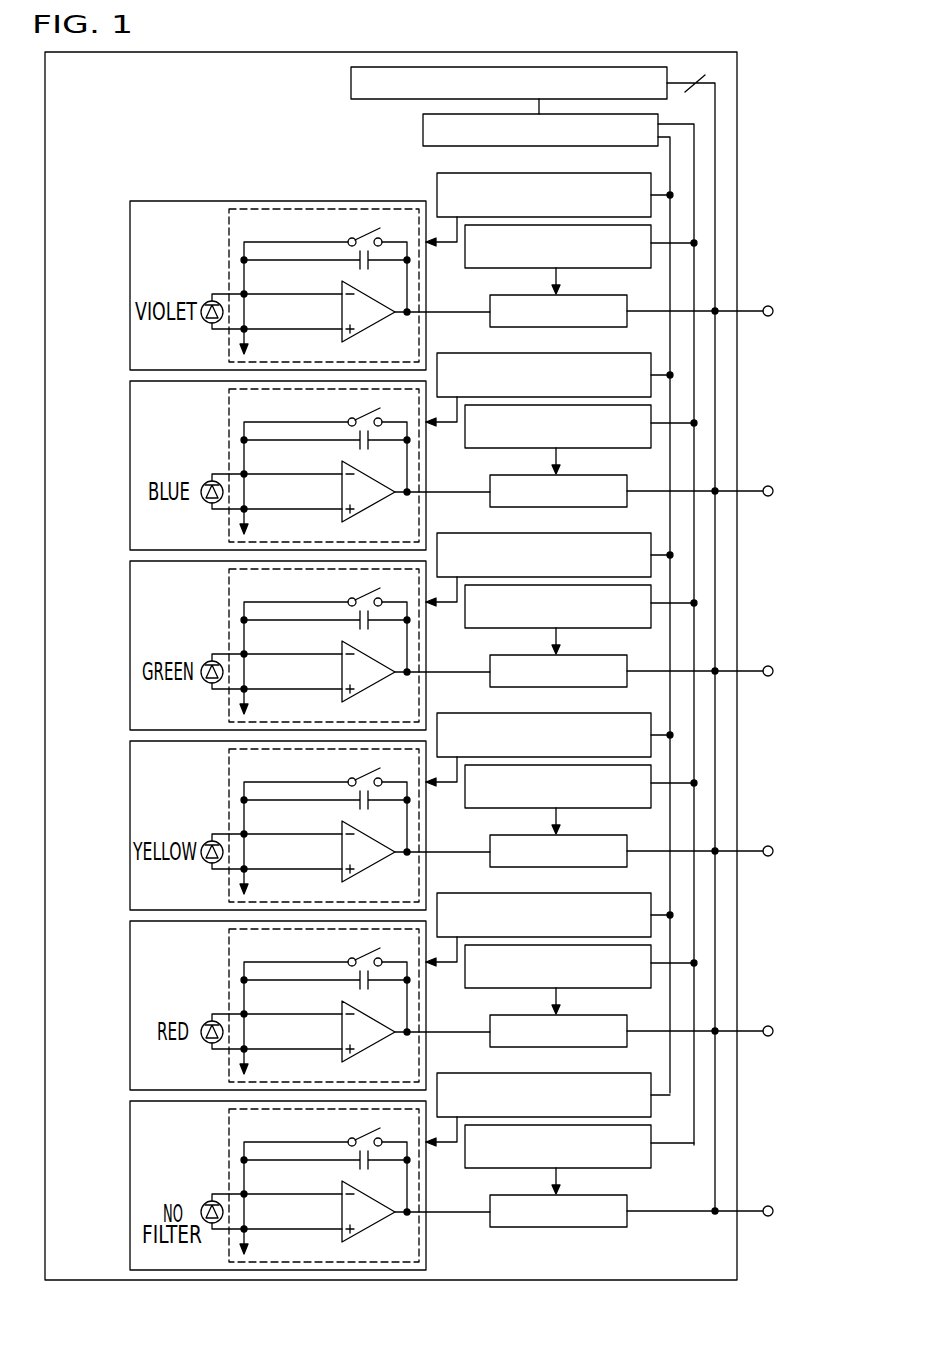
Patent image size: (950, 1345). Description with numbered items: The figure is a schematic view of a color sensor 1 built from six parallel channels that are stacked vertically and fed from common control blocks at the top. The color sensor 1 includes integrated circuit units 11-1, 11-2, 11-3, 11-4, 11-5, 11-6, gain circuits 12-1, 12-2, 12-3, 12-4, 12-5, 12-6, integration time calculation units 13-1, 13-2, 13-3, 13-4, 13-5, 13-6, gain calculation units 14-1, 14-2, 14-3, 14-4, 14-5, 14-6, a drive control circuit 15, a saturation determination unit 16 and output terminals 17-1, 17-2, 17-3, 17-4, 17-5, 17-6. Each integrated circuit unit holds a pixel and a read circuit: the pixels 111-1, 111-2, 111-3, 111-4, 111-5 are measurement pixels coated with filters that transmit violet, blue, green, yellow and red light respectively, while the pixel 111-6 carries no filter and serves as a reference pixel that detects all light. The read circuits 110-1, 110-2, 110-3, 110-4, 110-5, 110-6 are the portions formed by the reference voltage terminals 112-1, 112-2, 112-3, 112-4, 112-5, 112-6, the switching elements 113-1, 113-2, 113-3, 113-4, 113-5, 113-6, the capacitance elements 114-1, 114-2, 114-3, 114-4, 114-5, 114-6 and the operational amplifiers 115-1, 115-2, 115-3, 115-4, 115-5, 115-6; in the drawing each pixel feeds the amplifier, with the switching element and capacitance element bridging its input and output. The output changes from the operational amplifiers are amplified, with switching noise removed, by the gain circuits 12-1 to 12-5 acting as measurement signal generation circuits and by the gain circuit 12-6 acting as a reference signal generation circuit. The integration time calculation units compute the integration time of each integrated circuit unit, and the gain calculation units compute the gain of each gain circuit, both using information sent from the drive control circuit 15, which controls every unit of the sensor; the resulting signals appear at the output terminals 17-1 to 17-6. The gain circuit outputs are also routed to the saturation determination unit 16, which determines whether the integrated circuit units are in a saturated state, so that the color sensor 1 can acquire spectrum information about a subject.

The color sensor 1 is at (737, 72).
The saturation determination unit 16 is at (351, 83).
The drive control circuit 15 is at (423, 130).
The integrated circuit unit 11-1 is at (130, 226).
The integrated circuit unit 11-2 is at (243, 465).
The integrated circuit unit 11-3 is at (243, 645).
The integrated circuit unit 11-4 is at (243, 825).
The integrated circuit unit 11-5 is at (243, 1005).
The integrated circuit unit 11-6 is at (243, 1185).
The read circuit 110-1 is at (229, 226).
The read circuit 110-2 is at (282, 465).
The read circuit 110-3 is at (282, 645).
The read circuit 110-4 is at (282, 825).
The read circuit 110-5 is at (282, 1005).
The read circuit 110-6 is at (282, 1185).
The pixel 111-1 is at (203, 300).
The pixel 111-2 is at (184, 468).
The pixel 111-3 is at (184, 648).
The pixel 111-4 is at (184, 828).
The pixel 111-5 is at (184, 1008).
The pixel 111-6 is at (184, 1188).
The reference voltage terminal 112-1 is at (250, 350).
The reference voltage terminal 112-2 is at (285, 525).
The reference voltage terminal 112-3 is at (285, 705).
The reference voltage terminal 112-4 is at (285, 885).
The reference voltage terminal 112-5 is at (285, 1065).
The reference voltage terminal 112-6 is at (285, 1245).
The switching element 113-1 is at (352, 234).
The switching element 113-2 is at (329, 410).
The switching element 113-3 is at (329, 590).
The switching element 113-4 is at (329, 770).
The switching element 113-5 is at (329, 950).
The switching element 113-6 is at (329, 1130).
The capacitance element 114-1 is at (357, 264).
The capacitance element 114-2 is at (325, 451).
The capacitance element 114-3 is at (325, 631).
The capacitance element 114-4 is at (325, 811).
The capacitance element 114-5 is at (325, 991).
The capacitance element 114-6 is at (325, 1171).
The operational amplifier 115-1 is at (342, 312).
The operational amplifier 115-2 is at (326, 491).
The operational amplifier 115-3 is at (326, 671).
The operational amplifier 115-4 is at (326, 851).
The operational amplifier 115-5 is at (326, 1031).
The operational amplifier 115-6 is at (326, 1211).
The gain circuit 12-1 is at (594, 294).
The gain circuit 12-2 is at (626, 477).
The gain circuit 12-3 is at (626, 657).
The gain circuit 12-4 is at (626, 837).
The gain circuit 12-5 is at (626, 1017).
The gain circuit 12-6 is at (626, 1197).
The integration time calculation unit 13-1 is at (558, 174).
The integration time calculation unit 13-2 is at (549, 375).
The integration time calculation unit 13-3 is at (549, 555).
The integration time calculation unit 13-4 is at (549, 735).
The integration time calculation unit 13-5 is at (549, 915).
The integration time calculation unit 13-6 is at (548, 1095).
The gain calculation unit 14-1 is at (502, 270).
The gain calculation unit 14-2 is at (565, 438).
The gain calculation unit 14-3 is at (565, 618).
The gain calculation unit 14-4 is at (565, 798).
The gain calculation unit 14-5 is at (565, 978).
The gain calculation unit 14-6 is at (563, 1158).
The output terminal 17-1 is at (774, 311).
The output terminal 17-2 is at (803, 492).
The output terminal 17-3 is at (803, 672).
The output terminal 17-4 is at (803, 852).
The output terminal 17-5 is at (803, 1032).
The output terminal 17-6 is at (803, 1212).